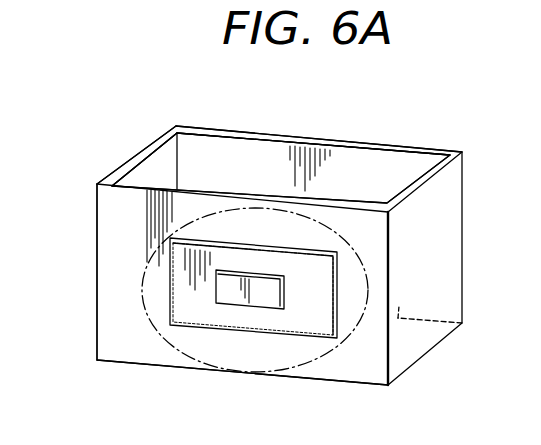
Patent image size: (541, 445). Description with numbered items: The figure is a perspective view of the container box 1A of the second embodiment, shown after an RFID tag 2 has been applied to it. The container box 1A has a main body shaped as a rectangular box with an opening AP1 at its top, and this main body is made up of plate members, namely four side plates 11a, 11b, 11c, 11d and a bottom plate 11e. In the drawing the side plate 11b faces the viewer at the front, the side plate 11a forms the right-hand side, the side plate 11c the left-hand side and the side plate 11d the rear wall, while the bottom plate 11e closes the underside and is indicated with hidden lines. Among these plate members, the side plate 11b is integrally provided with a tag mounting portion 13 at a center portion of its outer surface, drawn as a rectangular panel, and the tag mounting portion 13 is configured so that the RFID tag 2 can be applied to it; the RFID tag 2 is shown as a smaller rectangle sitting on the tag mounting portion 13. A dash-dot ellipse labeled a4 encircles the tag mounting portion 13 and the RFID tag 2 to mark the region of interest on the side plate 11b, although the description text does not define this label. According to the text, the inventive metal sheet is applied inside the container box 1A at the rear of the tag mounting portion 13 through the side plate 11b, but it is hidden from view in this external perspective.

The container box 1A is at (88, 262).
The side plate 11a is at (445, 207).
The side plate 11b is at (115, 325).
The side plate 11c is at (130, 159).
The side plate 11d is at (257, 133).
The bottom plate 11e is at (407, 360).
The opening AP1 is at (389, 168).
The region a4 is at (183, 343).
The tag mounting portion 13 is at (222, 332).
The RFID tag 2 is at (272, 300).